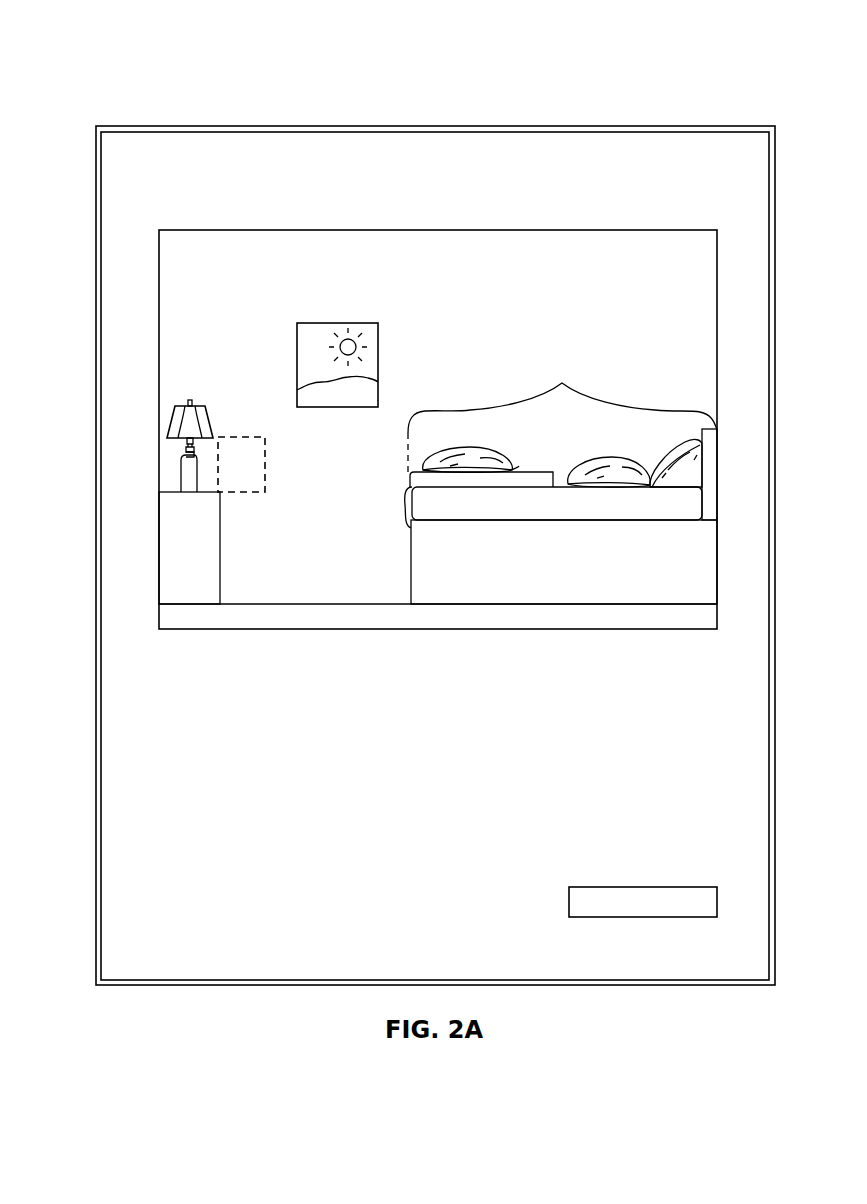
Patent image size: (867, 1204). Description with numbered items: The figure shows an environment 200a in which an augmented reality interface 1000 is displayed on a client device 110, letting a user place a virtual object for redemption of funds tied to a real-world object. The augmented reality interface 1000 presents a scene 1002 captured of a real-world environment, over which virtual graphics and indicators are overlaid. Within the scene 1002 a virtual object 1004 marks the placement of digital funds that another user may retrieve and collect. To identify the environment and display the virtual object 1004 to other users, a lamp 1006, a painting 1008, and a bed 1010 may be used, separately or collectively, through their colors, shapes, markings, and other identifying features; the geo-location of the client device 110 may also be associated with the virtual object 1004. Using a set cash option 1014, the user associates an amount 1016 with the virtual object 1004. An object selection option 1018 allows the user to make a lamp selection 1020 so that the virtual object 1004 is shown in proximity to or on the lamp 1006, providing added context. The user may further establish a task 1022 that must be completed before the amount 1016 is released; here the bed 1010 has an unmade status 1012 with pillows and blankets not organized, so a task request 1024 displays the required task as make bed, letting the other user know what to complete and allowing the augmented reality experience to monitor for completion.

The environment 200a is at (150, 60).
The client device 110 is at (483, 112).
The augmented reality interface 1000 is at (186, 126).
The scene 1002 is at (256, 230).
The virtual object 1004 is at (265, 487).
The lamp 1006 is at (198, 402).
The painting 1008 is at (380, 338).
The bed 1010 is at (410, 550).
The unmade status 1012 is at (562, 418).
The set cash option 1014 is at (590, 673).
The amount 1016 is at (660, 718).
The object selection option 1018 is at (615, 763).
The lamp selection 1020 is at (640, 812).
The task 1022 is at (645, 853).
The task request 1024 is at (562, 899).